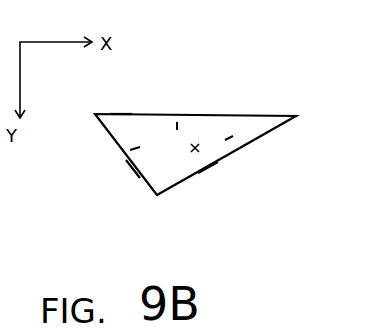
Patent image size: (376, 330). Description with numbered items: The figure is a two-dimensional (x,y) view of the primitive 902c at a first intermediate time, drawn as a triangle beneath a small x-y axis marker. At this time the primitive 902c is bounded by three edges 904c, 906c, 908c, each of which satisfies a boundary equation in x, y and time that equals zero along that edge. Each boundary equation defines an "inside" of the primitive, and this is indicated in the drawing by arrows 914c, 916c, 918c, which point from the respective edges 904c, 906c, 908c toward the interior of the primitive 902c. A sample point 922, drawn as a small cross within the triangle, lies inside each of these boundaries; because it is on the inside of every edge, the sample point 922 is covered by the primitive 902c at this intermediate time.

The primitive 902c is at (243, 115).
The edge 904c is at (133, 170).
The edge 906c is at (121, 112).
The edge 908c is at (208, 169).
The arrow 914c is at (136, 145).
The arrow 916c is at (172, 123).
The arrow 918c is at (221, 141).
The sample point 922 is at (195, 143).